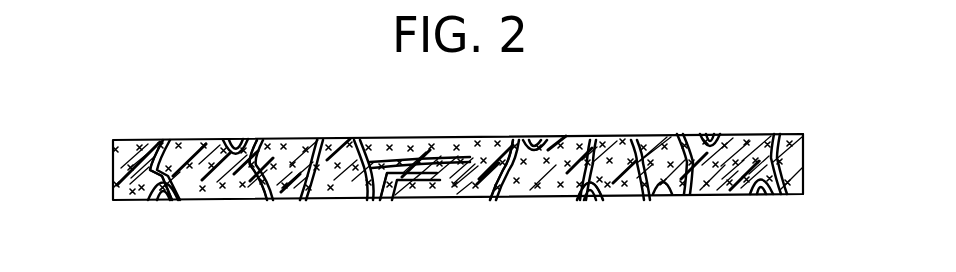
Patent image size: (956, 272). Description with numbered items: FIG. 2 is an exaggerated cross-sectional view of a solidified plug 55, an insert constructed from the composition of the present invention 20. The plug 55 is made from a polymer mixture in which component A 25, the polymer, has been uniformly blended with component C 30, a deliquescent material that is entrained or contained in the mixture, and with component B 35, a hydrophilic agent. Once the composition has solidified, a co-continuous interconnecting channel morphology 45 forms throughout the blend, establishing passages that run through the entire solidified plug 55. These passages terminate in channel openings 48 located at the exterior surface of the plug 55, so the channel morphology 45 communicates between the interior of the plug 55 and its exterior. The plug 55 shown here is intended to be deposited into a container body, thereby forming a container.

The composition of the present invention 20 is at (688, 115).
The component A 25 is at (143, 140).
The component C 30 is at (385, 188).
The component B 35 is at (262, 140).
The co-continuous interconnecting channel morphology 45 is at (213, 140).
The channel openings 48 is at (515, 137).
The plug 55 is at (827, 158).